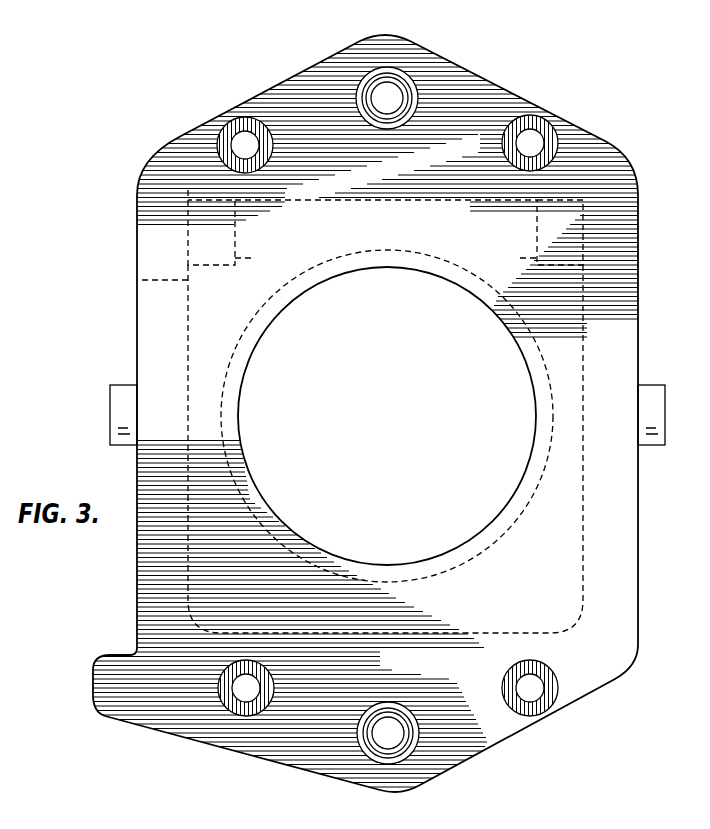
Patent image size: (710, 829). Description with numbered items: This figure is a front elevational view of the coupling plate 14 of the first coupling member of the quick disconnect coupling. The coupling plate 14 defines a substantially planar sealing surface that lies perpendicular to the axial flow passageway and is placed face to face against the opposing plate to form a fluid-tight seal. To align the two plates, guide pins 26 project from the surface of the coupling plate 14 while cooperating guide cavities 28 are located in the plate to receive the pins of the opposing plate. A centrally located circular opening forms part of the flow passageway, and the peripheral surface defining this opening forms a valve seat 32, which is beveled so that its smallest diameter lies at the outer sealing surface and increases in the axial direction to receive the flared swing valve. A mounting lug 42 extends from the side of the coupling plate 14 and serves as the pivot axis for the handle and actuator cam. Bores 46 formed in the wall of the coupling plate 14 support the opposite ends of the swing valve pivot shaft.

The coupling plate 14 is at (500, 86).
The guide pins 26 is at (243, 146).
The guide cavities 28 is at (390, 95).
The valve seat 32 is at (333, 565).
The mounting lug 42 is at (122, 406).
The bores 46 is at (207, 262).